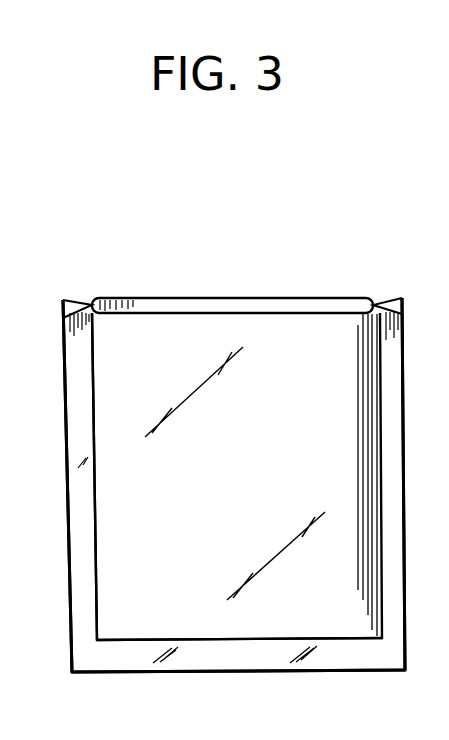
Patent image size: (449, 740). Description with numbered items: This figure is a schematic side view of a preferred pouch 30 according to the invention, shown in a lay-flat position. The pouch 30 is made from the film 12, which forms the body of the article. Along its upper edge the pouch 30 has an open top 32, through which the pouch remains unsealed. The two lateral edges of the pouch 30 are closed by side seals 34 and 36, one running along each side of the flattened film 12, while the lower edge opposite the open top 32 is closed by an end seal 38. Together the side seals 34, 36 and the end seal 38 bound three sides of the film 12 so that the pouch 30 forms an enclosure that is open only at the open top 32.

The pouch 30 is at (197, 252).
The open top 32 is at (257, 299).
The film 12 is at (120, 349).
The side seal 34 is at (95, 557).
The side seal 36 is at (376, 428).
The end seal 38 is at (230, 641).